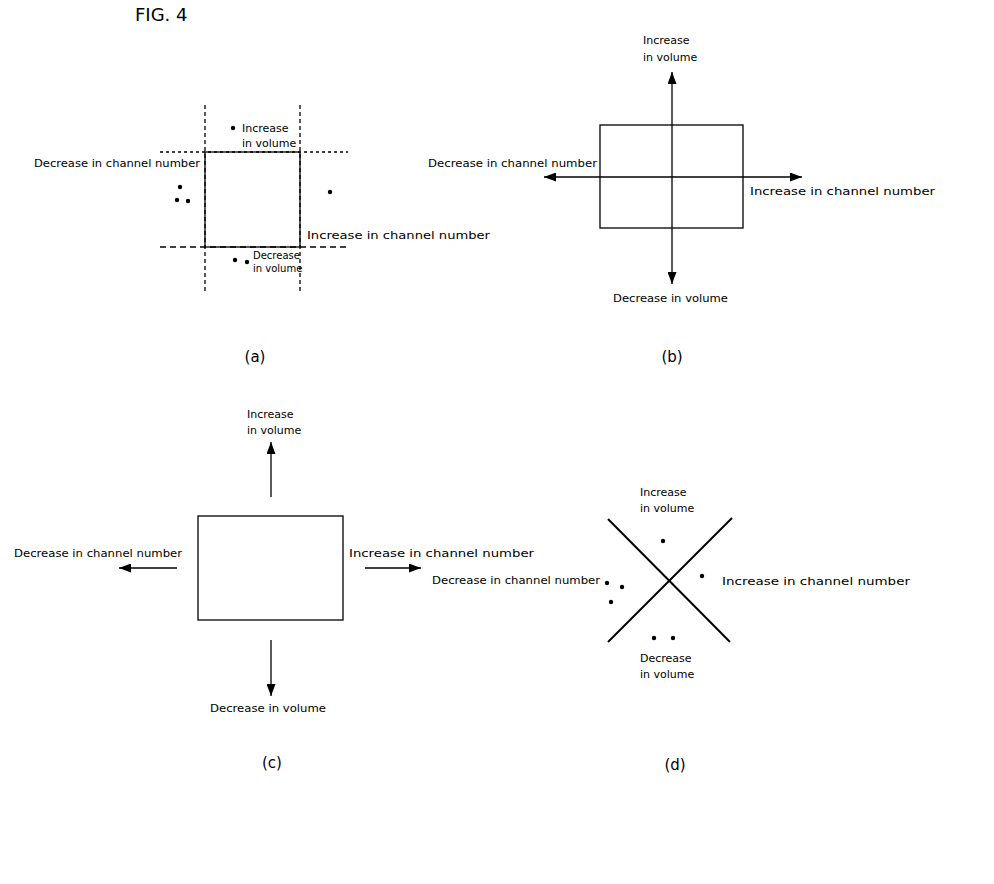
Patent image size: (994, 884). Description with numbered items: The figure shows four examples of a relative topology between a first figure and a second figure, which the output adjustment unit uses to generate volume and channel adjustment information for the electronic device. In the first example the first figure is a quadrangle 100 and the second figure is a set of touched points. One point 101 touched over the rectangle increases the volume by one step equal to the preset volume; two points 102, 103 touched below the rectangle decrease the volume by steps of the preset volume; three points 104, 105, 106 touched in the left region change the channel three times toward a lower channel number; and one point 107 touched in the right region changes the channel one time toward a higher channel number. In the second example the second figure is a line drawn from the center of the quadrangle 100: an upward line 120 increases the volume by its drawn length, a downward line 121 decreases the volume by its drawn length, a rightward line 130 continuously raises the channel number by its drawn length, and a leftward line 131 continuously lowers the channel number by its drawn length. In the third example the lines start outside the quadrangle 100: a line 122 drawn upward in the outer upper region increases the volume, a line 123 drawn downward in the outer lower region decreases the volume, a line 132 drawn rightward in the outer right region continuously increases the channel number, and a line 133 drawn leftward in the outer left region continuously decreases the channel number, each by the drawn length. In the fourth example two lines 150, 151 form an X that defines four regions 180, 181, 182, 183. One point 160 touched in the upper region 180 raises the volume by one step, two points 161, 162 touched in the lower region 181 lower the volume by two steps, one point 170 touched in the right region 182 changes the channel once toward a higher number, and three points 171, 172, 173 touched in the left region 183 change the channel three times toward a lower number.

The display region 100 is at (302, 170).
The point 101 is at (233, 126).
The point 102 is at (235, 262).
The point 103 is at (247, 264).
The point 104 is at (178, 187).
The point 105 is at (175, 200).
The point 106 is at (187, 203).
The point 107 is at (332, 192).
The line 120 is at (672, 108).
The line 121 is at (672, 243).
The line 130 is at (760, 177).
The line 131 is at (570, 177).
The line 122 is at (271, 480).
The line 123 is at (271, 668).
The line 132 is at (380, 570).
The line 133 is at (150, 570).
The lower decrease-in-volume point 150 is at (654, 640).
The diagonal boundary line 151 is at (714, 623).
The point 160 is at (661, 540).
The point 161 is at (629, 625).
The point 162 is at (675, 640).
The point 170 is at (704, 578).
The point 171 is at (606, 585).
The point 172 is at (621, 589).
The point 173 is at (611, 604).
The region 180 is at (680, 548).
The region 181 is at (684, 612).
The region 182 is at (702, 566).
The region 183 is at (638, 567).